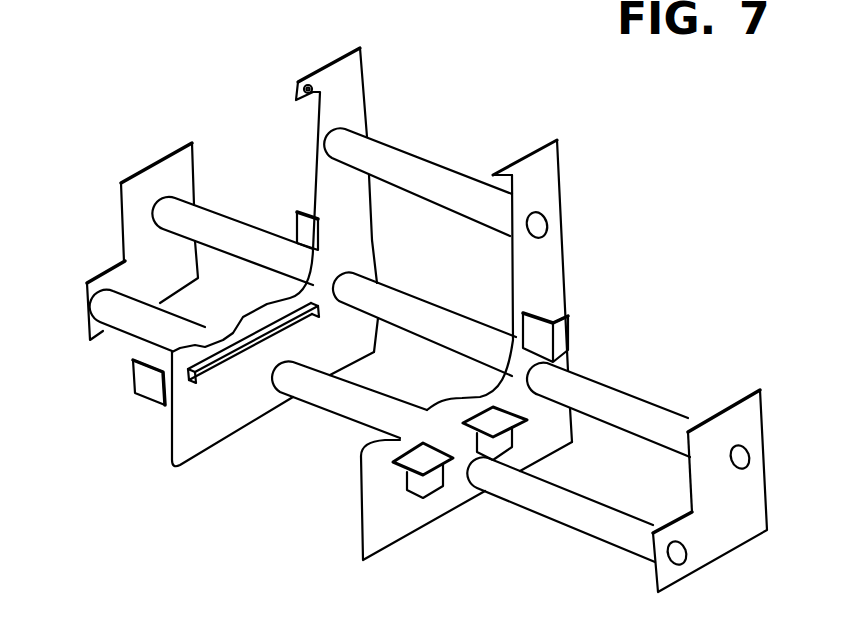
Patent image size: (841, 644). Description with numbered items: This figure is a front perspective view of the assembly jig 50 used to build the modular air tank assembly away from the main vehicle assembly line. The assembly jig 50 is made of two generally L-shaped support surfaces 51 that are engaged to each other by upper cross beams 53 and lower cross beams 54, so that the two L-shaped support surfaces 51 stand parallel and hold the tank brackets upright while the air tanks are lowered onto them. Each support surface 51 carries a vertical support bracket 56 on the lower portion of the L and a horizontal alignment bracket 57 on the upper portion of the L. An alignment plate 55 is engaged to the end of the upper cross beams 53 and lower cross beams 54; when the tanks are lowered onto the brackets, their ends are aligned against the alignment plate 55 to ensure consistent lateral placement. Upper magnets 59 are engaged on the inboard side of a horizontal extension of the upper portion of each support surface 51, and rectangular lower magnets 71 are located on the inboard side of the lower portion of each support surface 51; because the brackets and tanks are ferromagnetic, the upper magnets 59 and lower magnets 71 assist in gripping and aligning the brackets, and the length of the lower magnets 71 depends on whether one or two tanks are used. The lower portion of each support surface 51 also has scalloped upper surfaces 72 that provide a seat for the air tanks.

The assembly jig 50 is at (677, 316).
The L-shaped support surface 51 is at (348, 85).
The upper cross beam 53 is at (447, 183).
The lower cross beam 54 is at (658, 428).
The alignment plate 55 is at (148, 193).
The vertical support bracket 56 is at (497, 416).
The horizontal alignment bracket 57 is at (310, 214).
The upper magnet 59 is at (316, 91).
The lower magnet 71 is at (482, 391).
The scalloped upper surface 72 is at (217, 343).